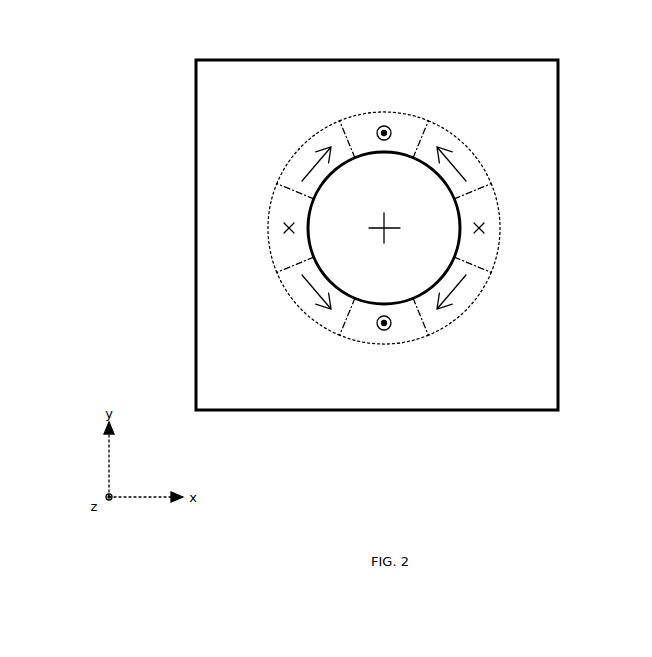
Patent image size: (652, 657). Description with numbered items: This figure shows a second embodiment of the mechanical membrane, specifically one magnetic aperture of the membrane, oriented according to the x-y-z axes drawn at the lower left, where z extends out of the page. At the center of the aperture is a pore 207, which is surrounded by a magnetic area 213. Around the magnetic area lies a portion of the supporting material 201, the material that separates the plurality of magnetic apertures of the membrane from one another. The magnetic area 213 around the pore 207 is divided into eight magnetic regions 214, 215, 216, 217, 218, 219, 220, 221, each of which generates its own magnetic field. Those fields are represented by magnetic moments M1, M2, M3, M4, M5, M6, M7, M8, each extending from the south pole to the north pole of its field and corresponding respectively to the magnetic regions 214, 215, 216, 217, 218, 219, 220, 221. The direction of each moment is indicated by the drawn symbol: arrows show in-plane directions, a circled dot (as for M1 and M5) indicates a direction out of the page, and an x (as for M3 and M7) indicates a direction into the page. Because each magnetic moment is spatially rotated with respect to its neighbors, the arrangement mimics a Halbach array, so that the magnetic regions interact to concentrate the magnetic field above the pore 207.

The supporting material 201 is at (507, 82).
The pore 207 is at (428, 232).
The magnetic area 213 is at (447, 130).
The magnetic region 214 is at (363, 120).
The magnetic region 215 is at (458, 148).
The magnetic region 216 is at (490, 207).
The magnetic region 217 is at (457, 305).
The magnetic region 218 is at (403, 333).
The magnetic region 219 is at (300, 285).
The magnetic region 220 is at (268, 195).
The magnetic region 221 is at (300, 167).
The magnetic moment M1 is at (395, 128).
The magnetic moment M2 is at (458, 168).
The magnetic moment M3 is at (485, 226).
The magnetic moment M4 is at (455, 290).
The magnetic moment M5 is at (383, 333).
The magnetic moment M6 is at (317, 295).
The magnetic moment M7 is at (283, 229).
The magnetic moment M8 is at (310, 162).